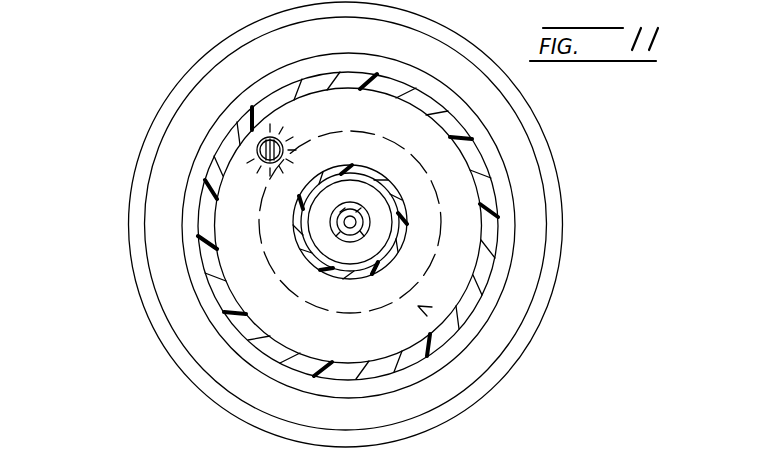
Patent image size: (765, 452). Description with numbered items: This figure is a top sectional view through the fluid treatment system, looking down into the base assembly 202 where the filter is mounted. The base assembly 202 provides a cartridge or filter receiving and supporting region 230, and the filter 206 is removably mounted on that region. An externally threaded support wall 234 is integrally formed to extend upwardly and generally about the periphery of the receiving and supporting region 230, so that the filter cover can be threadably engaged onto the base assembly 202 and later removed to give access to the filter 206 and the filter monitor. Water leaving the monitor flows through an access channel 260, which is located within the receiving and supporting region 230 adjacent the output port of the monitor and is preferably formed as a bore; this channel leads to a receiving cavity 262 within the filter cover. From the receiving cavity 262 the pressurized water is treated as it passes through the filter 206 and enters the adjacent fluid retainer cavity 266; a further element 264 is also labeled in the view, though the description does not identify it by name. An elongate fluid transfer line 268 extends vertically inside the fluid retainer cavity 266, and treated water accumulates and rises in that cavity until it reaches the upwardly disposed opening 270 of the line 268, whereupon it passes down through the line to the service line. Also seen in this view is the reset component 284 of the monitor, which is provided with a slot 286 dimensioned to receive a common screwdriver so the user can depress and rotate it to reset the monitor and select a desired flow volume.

The base assembly 202 is at (571, 236).
The filter 206 is at (440, 193).
The receiving and supporting region 230 is at (418, 306).
The support wall 234 is at (500, 212).
The access channel 260 is at (250, 133).
The receiving cavity 262 is at (455, 268).
The inner hatched ring 264 is at (388, 188).
The fluid retainer cavity 266 is at (341, 249).
The fluid transfer line 268 is at (333, 224).
The opening 270 is at (341, 248).
The reset component 284 is at (273, 136).
The slot 286 is at (258, 159).